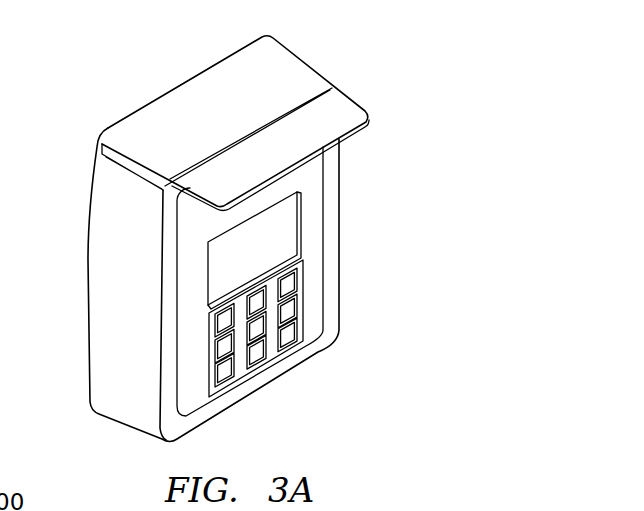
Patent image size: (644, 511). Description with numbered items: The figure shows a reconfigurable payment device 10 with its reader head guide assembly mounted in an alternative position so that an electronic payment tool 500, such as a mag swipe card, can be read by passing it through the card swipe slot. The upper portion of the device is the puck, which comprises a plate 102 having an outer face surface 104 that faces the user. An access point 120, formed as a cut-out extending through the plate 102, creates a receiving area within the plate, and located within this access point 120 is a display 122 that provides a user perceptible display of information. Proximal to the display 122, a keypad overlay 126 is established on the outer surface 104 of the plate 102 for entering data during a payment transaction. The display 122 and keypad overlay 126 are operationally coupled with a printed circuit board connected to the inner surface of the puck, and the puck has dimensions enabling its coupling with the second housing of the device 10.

The reconfigurable payment device 10 is at (105, 105).
The electronic payment tool 500 is at (342, 120).
The plate 102 is at (324, 200).
The outer surface 104 is at (203, 230).
The access point 120 is at (207, 304).
The display 122 is at (224, 270).
The keypad overlay 126 is at (261, 351).